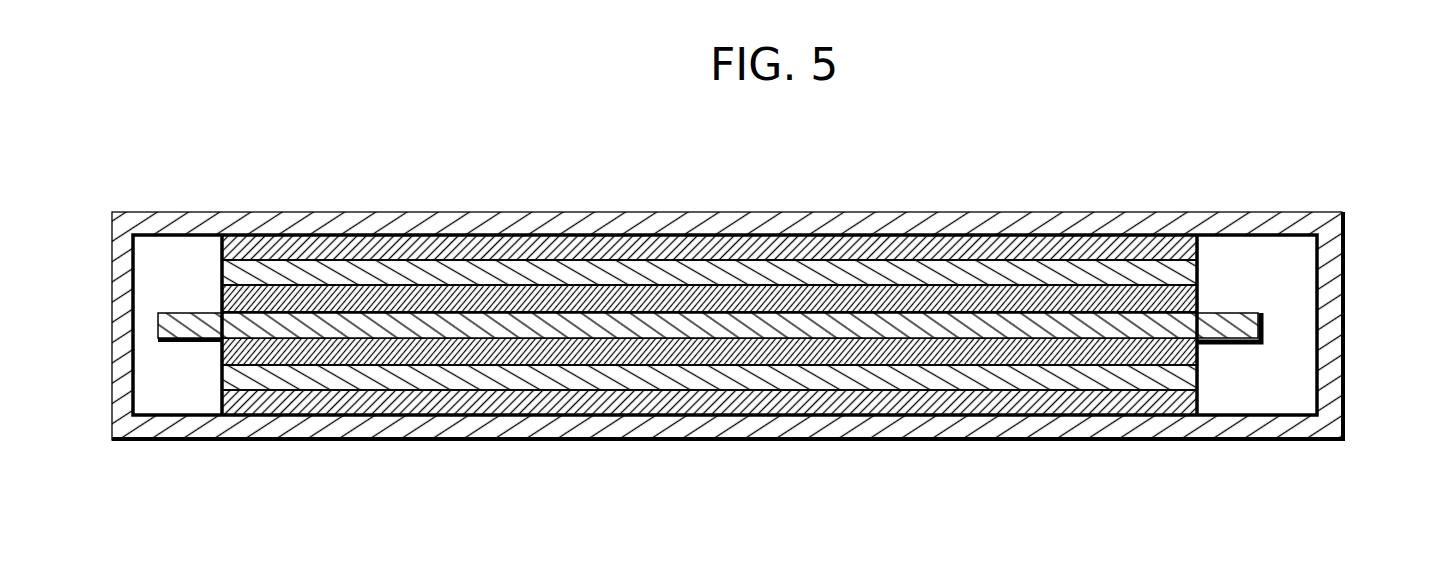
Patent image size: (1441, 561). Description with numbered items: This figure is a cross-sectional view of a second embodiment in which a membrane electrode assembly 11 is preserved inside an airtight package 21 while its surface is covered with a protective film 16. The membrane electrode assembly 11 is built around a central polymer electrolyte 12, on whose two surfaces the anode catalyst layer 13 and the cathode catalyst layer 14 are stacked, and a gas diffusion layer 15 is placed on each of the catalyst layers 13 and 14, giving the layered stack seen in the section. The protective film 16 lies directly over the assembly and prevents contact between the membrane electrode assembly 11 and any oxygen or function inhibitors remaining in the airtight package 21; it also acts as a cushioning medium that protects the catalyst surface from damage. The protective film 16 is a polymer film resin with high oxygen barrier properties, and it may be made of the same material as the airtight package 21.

The membrane electrode assembly 11 is at (779, 325).
The polymer electrolyte 12 is at (192, 317).
The anode catalyst layer 13 is at (312, 297).
The cathode catalyst layer 14 is at (317, 350).
The gas diffusion layer 15 is at (890, 380).
The protective film 16 is at (705, 393).
The airtight package 21 is at (445, 220).